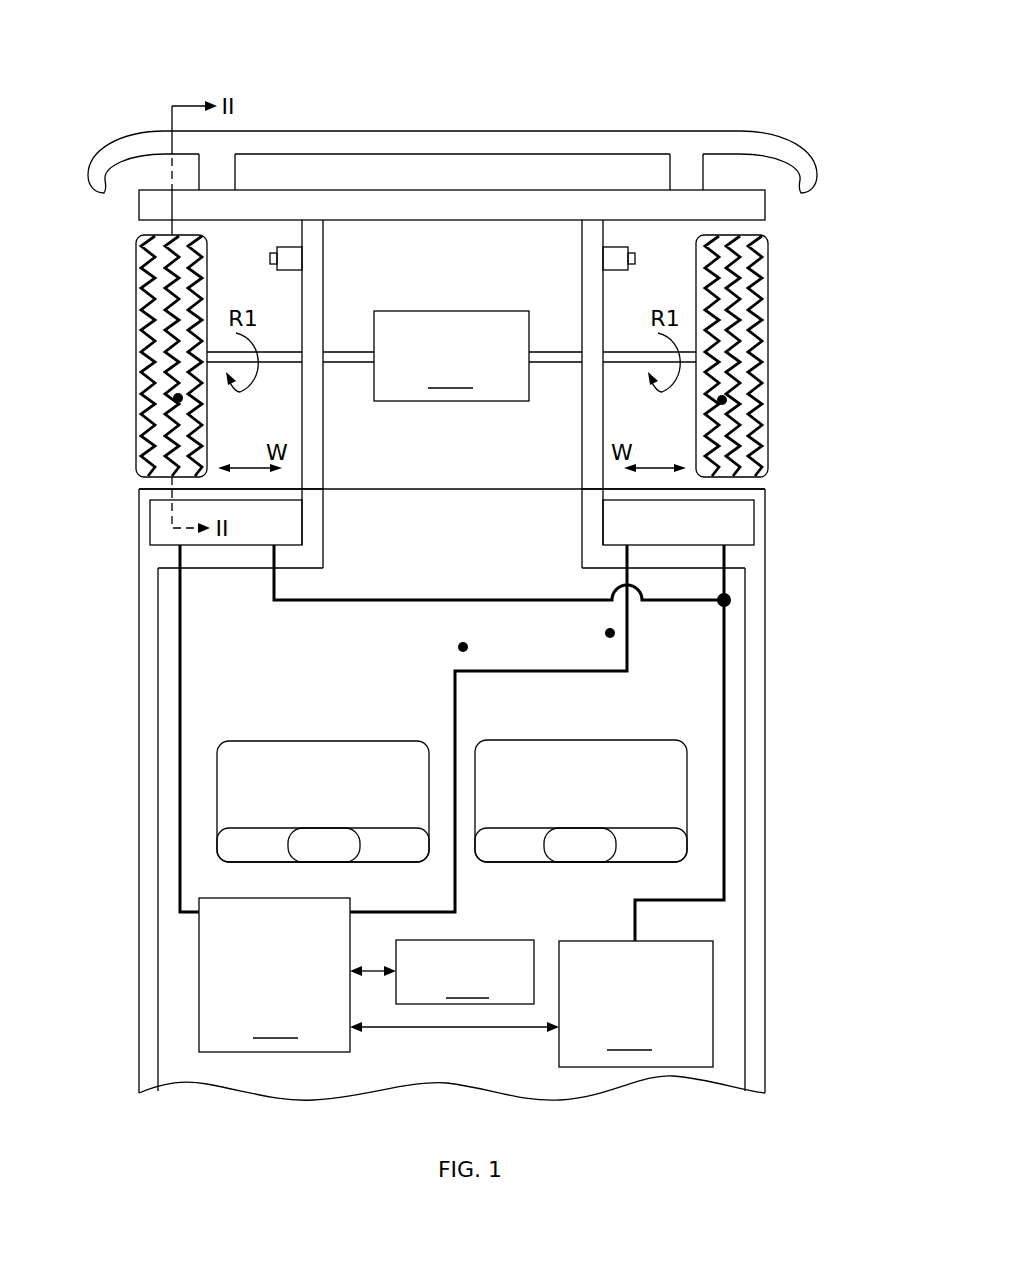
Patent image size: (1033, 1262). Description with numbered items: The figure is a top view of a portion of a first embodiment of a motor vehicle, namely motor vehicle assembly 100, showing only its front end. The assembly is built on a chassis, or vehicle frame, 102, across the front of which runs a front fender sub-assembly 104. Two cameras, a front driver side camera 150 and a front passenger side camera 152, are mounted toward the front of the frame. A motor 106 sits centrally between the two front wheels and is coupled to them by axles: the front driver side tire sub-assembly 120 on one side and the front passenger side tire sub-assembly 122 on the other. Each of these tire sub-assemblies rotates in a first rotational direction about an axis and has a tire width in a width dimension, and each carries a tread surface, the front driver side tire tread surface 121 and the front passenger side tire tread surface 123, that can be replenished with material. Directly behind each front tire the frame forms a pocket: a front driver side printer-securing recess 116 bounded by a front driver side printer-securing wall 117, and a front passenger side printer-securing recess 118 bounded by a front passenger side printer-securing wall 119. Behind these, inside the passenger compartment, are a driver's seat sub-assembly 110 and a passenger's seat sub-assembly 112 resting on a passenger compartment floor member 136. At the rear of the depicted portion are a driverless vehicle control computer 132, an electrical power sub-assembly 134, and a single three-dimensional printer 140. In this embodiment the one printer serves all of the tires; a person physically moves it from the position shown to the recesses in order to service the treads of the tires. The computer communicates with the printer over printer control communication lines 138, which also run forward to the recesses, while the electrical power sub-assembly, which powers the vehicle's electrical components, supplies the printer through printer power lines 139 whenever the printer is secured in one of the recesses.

The motor vehicle assembly 100 is at (60, 35).
The chassis 102 is at (139, 205).
The front fender sub-assembly 104 is at (815, 149).
The motor 106 is at (451, 356).
The driver's seat sub-assembly 110 is at (318, 741).
The passenger's seat sub-assembly 112 is at (588, 740).
The front driver side printer-securing recess 116 is at (122, 502).
The front driver side printer-securing wall 117 is at (139, 528).
The front passenger side printer-securing recess 118 is at (783, 502).
The front passenger side printer-securing wall 119 is at (765, 528).
The front driver side tire sub-assembly 120 is at (137, 352).
The front driver side tire tread surface 121 is at (178, 398).
The front passenger side tire sub-assembly 122 is at (768, 352).
The front passenger side tire tread surface 123 is at (722, 400).
The driverless vehicle control computer 132 is at (274, 975).
The electrical power sub-assembly 134 is at (531, 1004).
The passenger compartment floor member 136 is at (610, 633).
The 3D printer control communication lines 138 is at (185, 650).
The 3D printer power lines 139 is at (402, 603).
The 3D printer 140 is at (442, 972).
The front driver side camera 150 is at (288, 238).
The front passenger side camera 152 is at (616, 238).